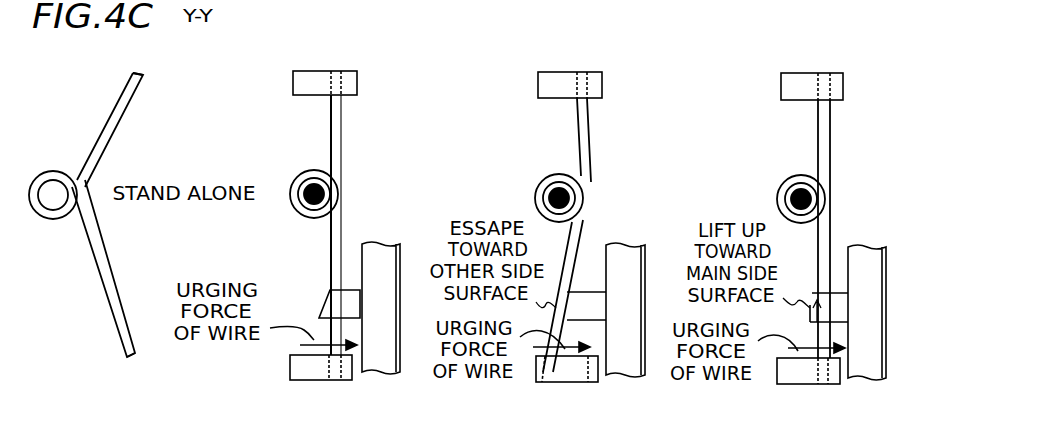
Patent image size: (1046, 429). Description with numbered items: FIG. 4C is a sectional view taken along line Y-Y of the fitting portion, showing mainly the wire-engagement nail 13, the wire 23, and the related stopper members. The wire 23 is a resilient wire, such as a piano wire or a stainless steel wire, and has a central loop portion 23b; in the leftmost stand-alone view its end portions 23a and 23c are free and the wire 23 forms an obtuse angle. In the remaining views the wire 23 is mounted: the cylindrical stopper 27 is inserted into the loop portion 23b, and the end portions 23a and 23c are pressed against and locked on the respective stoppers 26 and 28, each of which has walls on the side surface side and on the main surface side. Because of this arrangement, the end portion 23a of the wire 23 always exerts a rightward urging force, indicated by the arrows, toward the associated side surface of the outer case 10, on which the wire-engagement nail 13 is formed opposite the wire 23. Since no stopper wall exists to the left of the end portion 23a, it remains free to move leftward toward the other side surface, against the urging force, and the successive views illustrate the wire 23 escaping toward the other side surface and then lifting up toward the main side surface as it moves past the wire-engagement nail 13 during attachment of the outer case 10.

The wire 23 is at (103, 231).
The end portion 23a is at (125, 353).
The loop portion 23b is at (45, 218).
The end portion 23c is at (136, 76).
The stopper 28 is at (357, 84).
The stopper 27 is at (332, 195).
The outer case 10 is at (400, 254).
The wire-engagement nail 13 is at (324, 308).
The stopper 26 is at (290, 368).